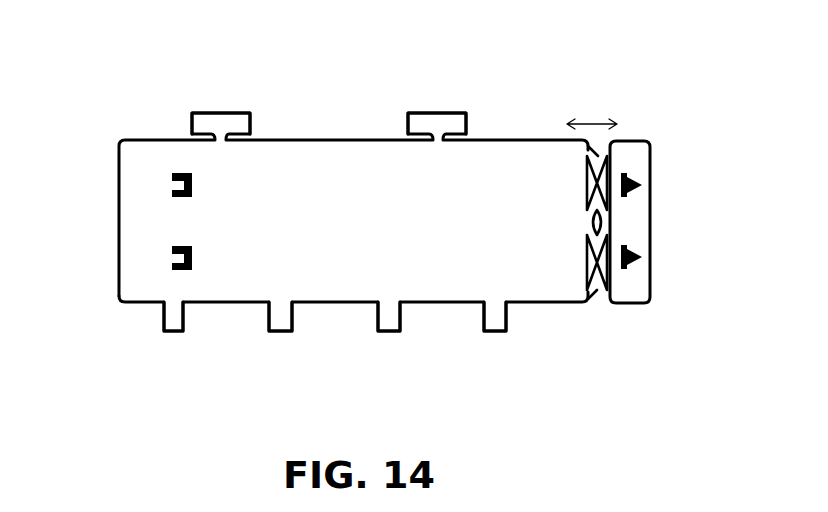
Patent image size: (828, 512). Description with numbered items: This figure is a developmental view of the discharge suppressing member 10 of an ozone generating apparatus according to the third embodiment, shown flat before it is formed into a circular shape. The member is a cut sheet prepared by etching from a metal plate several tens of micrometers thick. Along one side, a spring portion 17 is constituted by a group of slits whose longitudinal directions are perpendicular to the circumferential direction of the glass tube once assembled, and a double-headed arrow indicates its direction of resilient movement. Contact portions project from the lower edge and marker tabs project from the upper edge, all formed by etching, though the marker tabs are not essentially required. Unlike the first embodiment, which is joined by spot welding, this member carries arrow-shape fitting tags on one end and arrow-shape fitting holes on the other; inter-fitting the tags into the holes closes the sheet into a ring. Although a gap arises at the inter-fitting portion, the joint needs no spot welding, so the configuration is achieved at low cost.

The discharge suppressing member 10 is at (375, 27).
The spring portion 17 is at (592, 121).